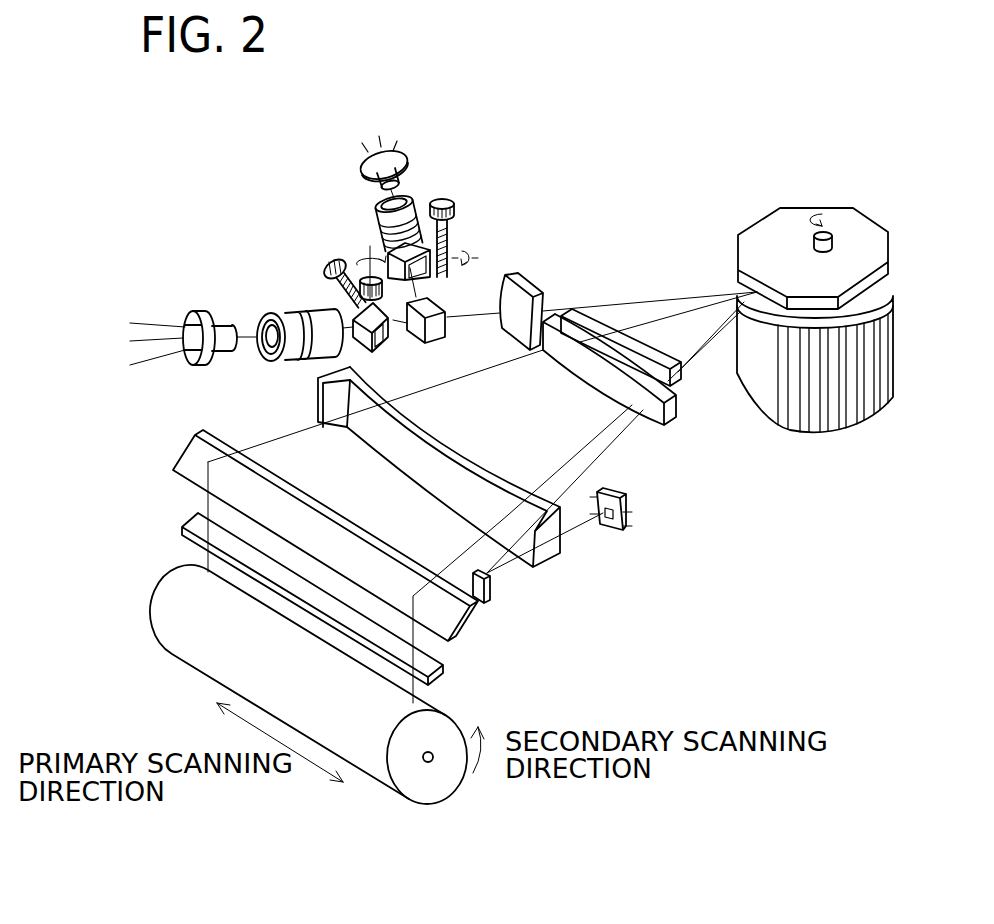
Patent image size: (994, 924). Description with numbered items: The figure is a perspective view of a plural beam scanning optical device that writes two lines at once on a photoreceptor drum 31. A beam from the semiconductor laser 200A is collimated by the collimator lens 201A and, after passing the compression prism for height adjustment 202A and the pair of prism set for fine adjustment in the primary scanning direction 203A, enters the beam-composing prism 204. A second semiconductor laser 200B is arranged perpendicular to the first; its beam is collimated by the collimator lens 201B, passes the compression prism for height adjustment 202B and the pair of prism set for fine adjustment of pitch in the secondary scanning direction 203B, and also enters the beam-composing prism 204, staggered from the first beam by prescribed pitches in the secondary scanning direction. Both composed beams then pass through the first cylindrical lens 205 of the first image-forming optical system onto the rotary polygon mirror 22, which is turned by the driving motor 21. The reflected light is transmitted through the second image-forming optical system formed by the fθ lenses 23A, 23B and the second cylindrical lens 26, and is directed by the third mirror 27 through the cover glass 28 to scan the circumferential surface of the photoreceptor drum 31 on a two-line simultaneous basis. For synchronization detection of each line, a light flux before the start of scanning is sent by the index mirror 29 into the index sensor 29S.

The semiconductor laser 200A is at (207, 308).
The collimator lens 201A is at (282, 308).
The compression prism for height adjustment 202A is at (303, 355).
The pair of prism set for fine adjustment in the primary scanning direction 203A is at (383, 335).
The beam-composing prism 204 is at (447, 328).
The semiconductor laser 200B is at (408, 153).
The collimator lens 201B is at (410, 203).
The compression prism for height adjustment 202B is at (372, 233).
The pair of prism set for fine adjustment of pitch in the secondary scanning directi 203B is at (418, 277).
The first cylindrical lens 205 is at (533, 288).
The fθ lens 23A is at (635, 343).
The fθ lens 23B is at (597, 395).
The polygon mirror 22 is at (763, 222).
The driving motor 21 is at (760, 322).
The second cylindrical lens 26 is at (477, 468).
The third mirror 27 is at (470, 623).
The cover glass 28 is at (339, 602).
The index mirror 29 is at (493, 588).
The index sensor 29S is at (603, 527).
The photoreceptor drum 31 is at (200, 575).